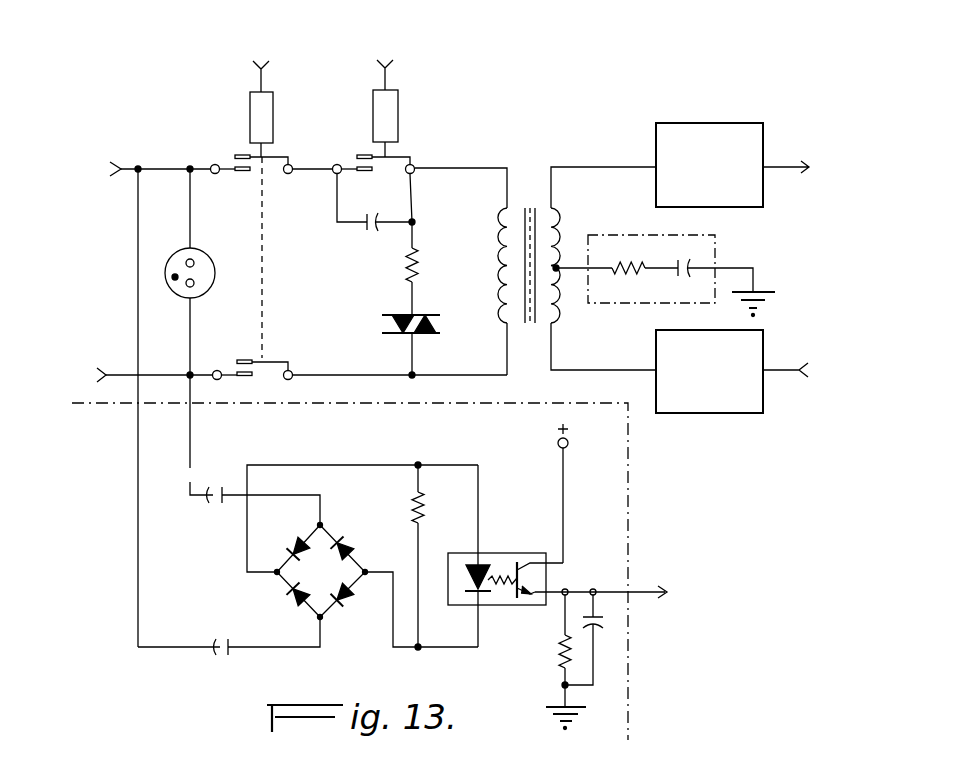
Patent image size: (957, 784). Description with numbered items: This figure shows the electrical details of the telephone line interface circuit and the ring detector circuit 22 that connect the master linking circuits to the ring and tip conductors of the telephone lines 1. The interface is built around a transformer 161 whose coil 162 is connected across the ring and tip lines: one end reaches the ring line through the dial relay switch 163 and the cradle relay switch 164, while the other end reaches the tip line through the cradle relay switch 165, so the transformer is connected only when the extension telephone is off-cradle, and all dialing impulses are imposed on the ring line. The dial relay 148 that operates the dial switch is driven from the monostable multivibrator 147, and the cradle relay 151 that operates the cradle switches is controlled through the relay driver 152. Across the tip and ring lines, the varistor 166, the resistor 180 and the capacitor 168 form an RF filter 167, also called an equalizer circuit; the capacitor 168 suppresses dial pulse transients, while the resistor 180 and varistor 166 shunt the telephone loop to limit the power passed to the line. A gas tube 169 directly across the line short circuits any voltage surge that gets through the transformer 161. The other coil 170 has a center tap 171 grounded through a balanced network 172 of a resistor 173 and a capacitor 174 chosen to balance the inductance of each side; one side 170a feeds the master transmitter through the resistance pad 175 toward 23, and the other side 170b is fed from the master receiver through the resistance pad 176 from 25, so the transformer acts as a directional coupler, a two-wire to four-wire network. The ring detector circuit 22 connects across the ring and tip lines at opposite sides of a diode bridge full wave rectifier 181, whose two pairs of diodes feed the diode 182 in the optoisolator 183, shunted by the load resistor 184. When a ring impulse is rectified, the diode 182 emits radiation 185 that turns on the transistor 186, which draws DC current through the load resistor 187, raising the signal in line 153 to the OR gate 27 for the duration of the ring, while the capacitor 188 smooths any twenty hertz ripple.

The telephone lines 1 is at (118, 236).
The ring detector circuit 22 is at (632, 713).
The circuit receiving transformer output 23 is at (813, 168).
The circuit supplying transformer input 25 is at (823, 370).
The OR gate 27 is at (705, 592).
The monostable multivibrator 147 is at (385, 56).
The dial relay 148 is at (398, 105).
The cradle relay 151 is at (250, 99).
The relay driver 152 is at (262, 58).
The line 153 is at (608, 588).
The transformer 161 is at (527, 200).
The coil 162 is at (505, 256).
The dial relay switch 163 is at (362, 154).
The cradle relay switch 164 is at (240, 173).
The cradle relay switch 165 is at (266, 359).
The varistor 166 is at (436, 323).
The RF filter 167 is at (390, 240).
The capacitor 168 is at (376, 202).
The gas tube 169 is at (196, 293).
The coil 170 is at (563, 264).
The side of coil 170a is at (550, 220).
The side of coil 170b is at (555, 312).
The center tap 171 is at (558, 272).
The balanced network 172 is at (718, 249).
The resistor 173 is at (630, 262).
The capacitor 174 is at (682, 284).
The resistance pad 175 is at (695, 123).
The resistance pad 176 is at (715, 413).
The resistor 180 is at (420, 262).
The diode bridge full wave rectifier 181 is at (273, 586).
The diode 182 is at (470, 568).
The optoisolator 183 is at (510, 553).
The load resistor 184 is at (412, 512).
The radiation 185 is at (498, 586).
The transistor 186 is at (516, 590).
The load resistor 187 is at (565, 641).
The capacitor 188 is at (612, 622).